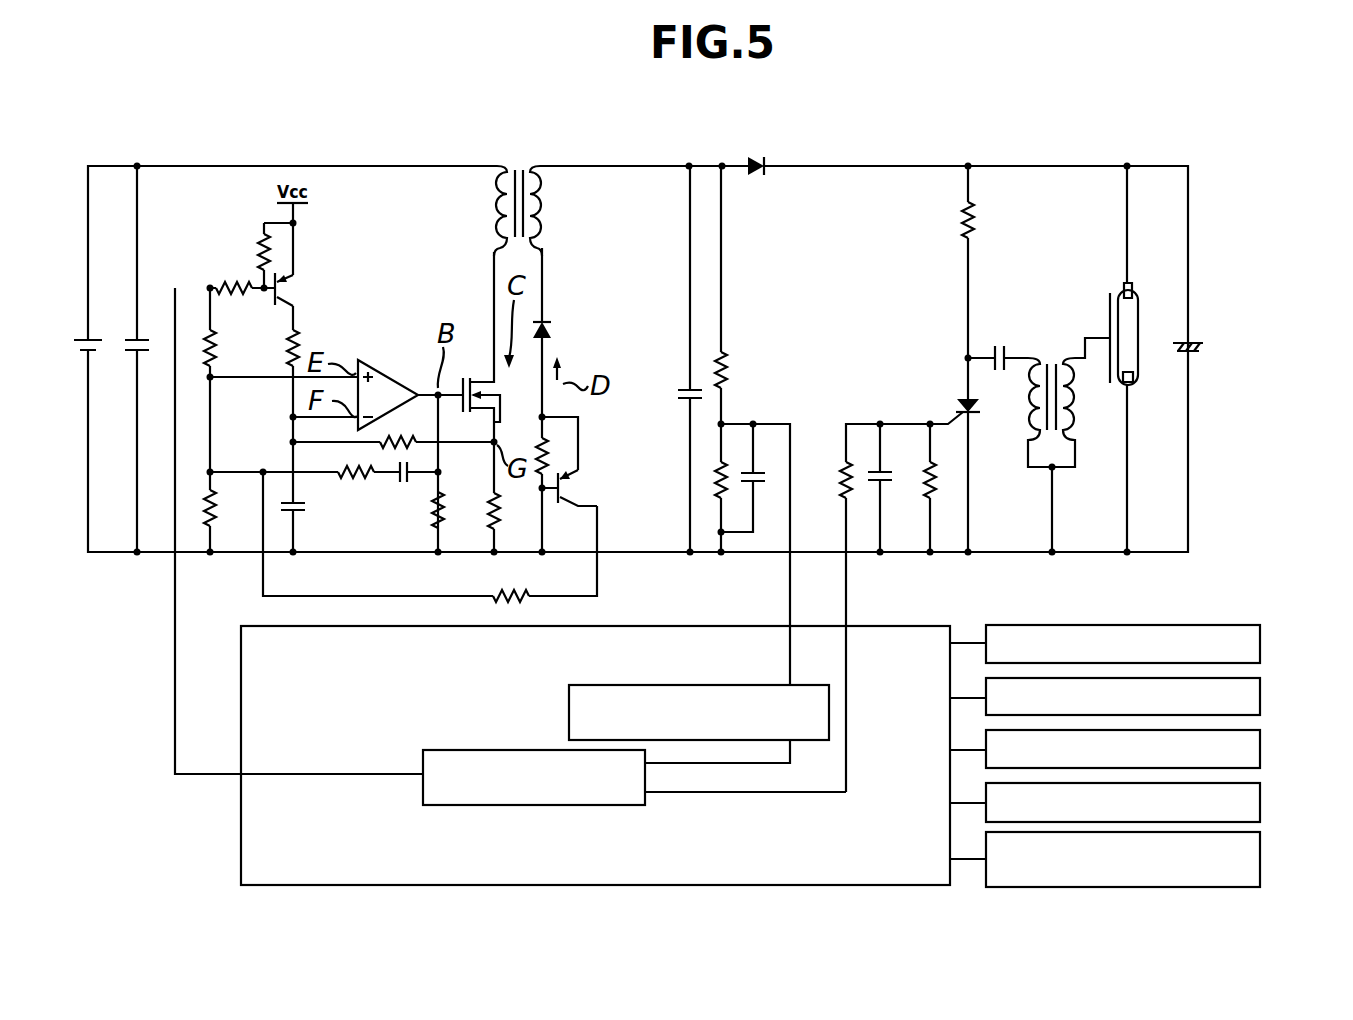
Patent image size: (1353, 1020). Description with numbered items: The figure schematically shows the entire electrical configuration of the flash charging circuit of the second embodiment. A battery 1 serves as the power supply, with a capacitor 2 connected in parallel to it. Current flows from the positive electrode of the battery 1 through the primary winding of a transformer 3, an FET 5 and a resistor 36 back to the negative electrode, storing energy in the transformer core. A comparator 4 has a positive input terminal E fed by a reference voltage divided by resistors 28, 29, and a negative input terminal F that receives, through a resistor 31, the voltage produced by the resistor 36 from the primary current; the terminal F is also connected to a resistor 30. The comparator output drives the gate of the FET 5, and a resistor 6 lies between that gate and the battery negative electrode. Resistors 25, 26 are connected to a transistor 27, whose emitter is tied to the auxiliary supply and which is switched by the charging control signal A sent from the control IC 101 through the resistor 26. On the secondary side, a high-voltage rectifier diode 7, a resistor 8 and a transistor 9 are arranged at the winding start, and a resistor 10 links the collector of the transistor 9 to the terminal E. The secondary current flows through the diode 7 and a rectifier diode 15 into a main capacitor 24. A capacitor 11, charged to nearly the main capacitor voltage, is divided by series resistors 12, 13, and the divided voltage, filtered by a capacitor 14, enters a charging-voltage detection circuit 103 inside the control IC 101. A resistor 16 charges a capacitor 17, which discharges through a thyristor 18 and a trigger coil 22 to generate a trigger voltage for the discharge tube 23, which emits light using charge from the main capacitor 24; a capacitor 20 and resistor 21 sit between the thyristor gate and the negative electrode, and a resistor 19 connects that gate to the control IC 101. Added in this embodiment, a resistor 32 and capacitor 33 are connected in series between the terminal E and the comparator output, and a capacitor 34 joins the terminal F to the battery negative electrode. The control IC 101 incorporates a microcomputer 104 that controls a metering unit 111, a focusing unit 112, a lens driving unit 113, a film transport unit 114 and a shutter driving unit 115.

The battery 1 is at (94, 338).
The capacitor 2 is at (142, 338).
The transformer 3 is at (520, 165).
The comparator 4 is at (395, 361).
The FET 5 is at (497, 392).
The resistor 6 is at (446, 497).
The high-voltage rectifier diode 7 is at (555, 328).
The resistor 8 is at (548, 448).
The transistor 9 is at (575, 492).
The resistor 10 is at (525, 590).
The capacitor 11 is at (683, 388).
The resistor 12 is at (728, 368).
The resistor 13 is at (724, 482).
The capacitor 14 is at (757, 470).
The rectifier diode 15 is at (755, 158).
The resistor 16 is at (985, 228).
The capacitor 17 is at (1000, 341).
The thyristor 18 is at (958, 403).
The resistor 19 is at (846, 497).
The capacitor 20 is at (884, 484).
The resistor 21 is at (927, 478).
The trigger coil 22 is at (1053, 352).
The discharge tube 23 is at (1132, 293).
The main capacitor 24 is at (1190, 342).
The resistor 25 is at (262, 232).
The resistor 26 is at (217, 282).
The transistor 27 is at (298, 290).
The resistor 28 is at (222, 340).
The resistor 29 is at (214, 508).
The resistor 30 is at (305, 340).
The resistor 31 is at (398, 440).
The resistor 32 is at (366, 482).
The capacitor 33 is at (400, 485).
The capacitor 34 is at (303, 505).
The resistor 36 is at (493, 512).
The control IC 101 is at (241, 846).
The charging-voltage detection circuit 103 is at (703, 685).
The microcomputer 104 is at (498, 748).
The metering unit 111 is at (1262, 643).
The focusing unit 112 is at (1262, 698).
The lens driving unit 113 is at (1262, 750).
The film transport unit 114 is at (1262, 803).
The shutter driving unit 115 is at (1262, 859).